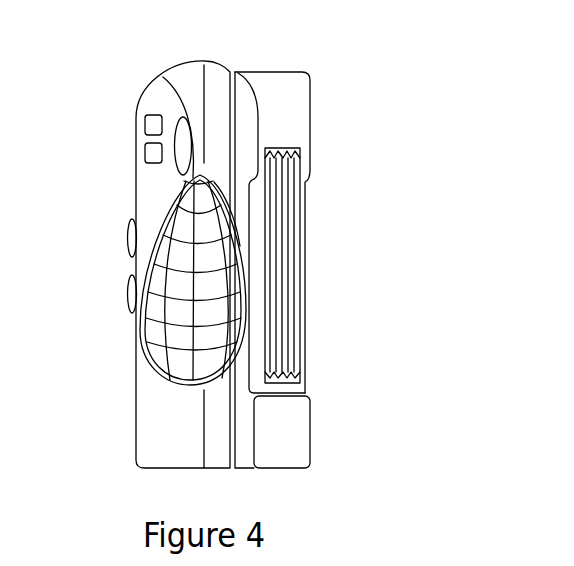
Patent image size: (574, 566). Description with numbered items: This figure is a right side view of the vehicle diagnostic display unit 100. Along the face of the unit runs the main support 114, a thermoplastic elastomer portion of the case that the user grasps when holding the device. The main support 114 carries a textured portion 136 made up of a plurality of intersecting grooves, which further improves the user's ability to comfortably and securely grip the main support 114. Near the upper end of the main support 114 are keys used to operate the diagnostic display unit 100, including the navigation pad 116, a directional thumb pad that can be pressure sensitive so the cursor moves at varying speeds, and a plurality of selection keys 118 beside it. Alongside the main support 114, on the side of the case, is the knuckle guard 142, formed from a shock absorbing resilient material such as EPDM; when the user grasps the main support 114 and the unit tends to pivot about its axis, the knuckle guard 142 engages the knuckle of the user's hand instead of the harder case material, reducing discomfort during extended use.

The vehicle diagnostic display unit 100 is at (397, 125).
The main support 114 is at (210, 61).
The navigation pad 116 is at (182, 168).
The selection keys 118 is at (148, 152).
The textured portion 136 is at (175, 355).
The knuckle guard 142 is at (292, 255).